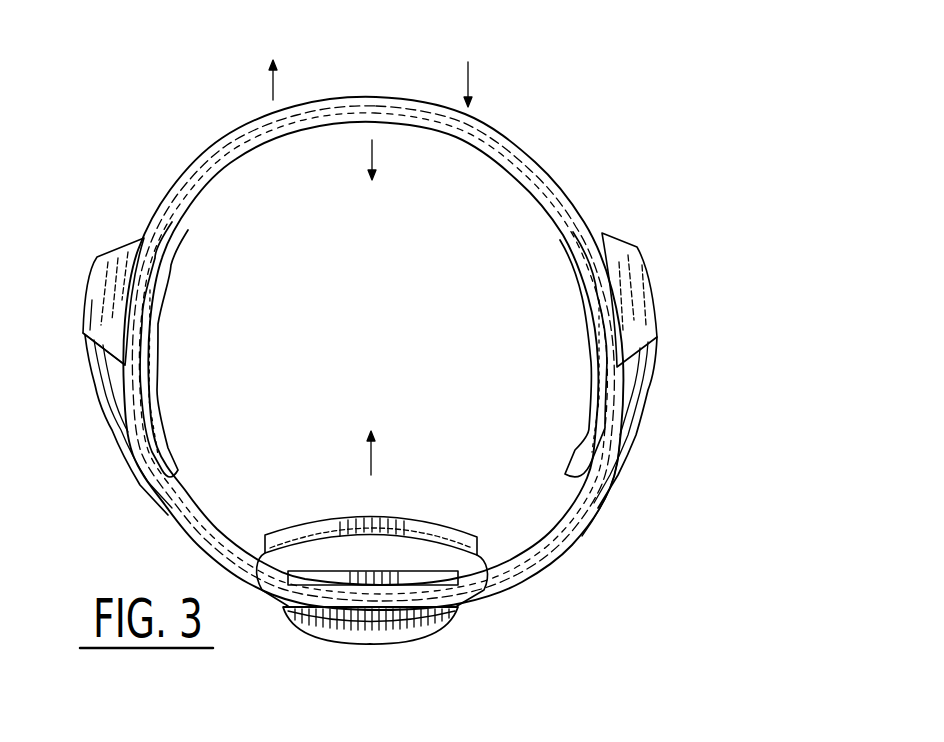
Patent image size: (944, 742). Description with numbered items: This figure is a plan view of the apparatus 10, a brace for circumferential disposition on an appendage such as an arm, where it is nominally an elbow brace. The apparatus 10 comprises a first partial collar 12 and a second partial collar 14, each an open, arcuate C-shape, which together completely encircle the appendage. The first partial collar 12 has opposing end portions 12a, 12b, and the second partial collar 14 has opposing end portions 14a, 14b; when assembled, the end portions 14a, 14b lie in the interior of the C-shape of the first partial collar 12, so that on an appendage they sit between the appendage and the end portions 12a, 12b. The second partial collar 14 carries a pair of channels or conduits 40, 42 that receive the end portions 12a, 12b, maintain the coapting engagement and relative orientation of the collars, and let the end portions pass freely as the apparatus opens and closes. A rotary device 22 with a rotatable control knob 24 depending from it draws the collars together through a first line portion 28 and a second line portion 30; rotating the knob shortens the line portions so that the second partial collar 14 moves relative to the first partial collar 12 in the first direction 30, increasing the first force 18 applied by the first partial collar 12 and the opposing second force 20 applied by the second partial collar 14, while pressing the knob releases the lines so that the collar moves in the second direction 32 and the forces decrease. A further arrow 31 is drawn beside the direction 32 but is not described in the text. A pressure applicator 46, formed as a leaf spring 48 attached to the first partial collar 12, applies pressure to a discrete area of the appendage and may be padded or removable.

The apparatus 10 is at (581, 97).
The first partial collar 12 is at (497, 588).
The end portion of first partial collar 12a is at (617, 473).
The end portion of first partial collar 12b is at (127, 447).
The second partial collar 14 is at (374, 97).
The end portion of second partial collar 14a is at (590, 402).
The end portion of second partial collar 14b is at (164, 437).
The first force 18 is at (366, 460).
The second force 20 is at (372, 152).
The rotary device 22 is at (345, 578).
The rotatable control knob 24 is at (410, 630).
The first line portion 28 is at (648, 390).
The first direction 30 is at (98, 378).
The inward direction 31 is at (468, 87).
The second direction 32 is at (273, 87).
The conduit 40 is at (606, 236).
The conduit 42 is at (136, 240).
The pressure applicator 46 is at (393, 523).
The leaf spring 48 is at (478, 568).